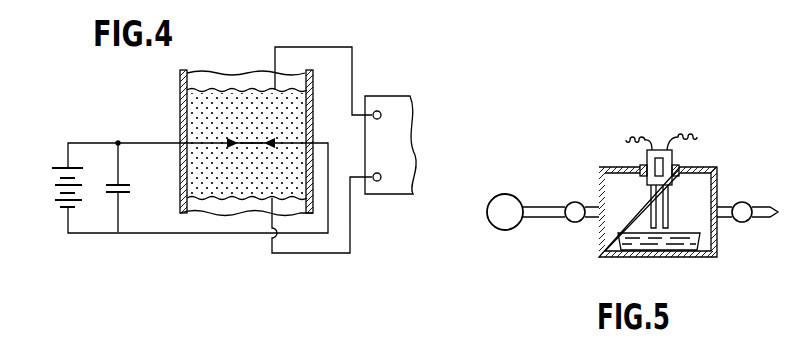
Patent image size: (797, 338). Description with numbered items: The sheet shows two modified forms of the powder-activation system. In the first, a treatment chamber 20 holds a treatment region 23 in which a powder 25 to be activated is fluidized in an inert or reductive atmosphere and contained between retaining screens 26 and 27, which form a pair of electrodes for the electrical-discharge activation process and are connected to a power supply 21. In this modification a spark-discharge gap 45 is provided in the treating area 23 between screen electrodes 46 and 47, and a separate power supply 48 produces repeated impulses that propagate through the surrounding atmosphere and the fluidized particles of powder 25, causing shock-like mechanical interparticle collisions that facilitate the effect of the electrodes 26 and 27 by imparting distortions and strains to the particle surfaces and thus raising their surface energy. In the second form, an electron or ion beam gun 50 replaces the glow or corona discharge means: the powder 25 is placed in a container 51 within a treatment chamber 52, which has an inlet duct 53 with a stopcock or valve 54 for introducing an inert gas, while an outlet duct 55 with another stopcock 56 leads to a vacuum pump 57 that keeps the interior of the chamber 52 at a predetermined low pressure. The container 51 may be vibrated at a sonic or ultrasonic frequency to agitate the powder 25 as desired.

In FIG. 4, the treatment chamber 20 is at (174, 99).
In FIG. 4, the power supply 21 is at (420, 141).
In FIG. 4, the treatment region 23 is at (310, 122).
In FIG. 4, the powder 25 is at (238, 98).
In FIG. 5, the powder 25 is at (645, 250).
In FIG. 4, the retaining screen 26 is at (197, 87).
In FIG. 4, the retaining screen 27 is at (223, 200).
In FIG. 4, the spark-discharge gap 45 is at (252, 150).
In FIG. 4, the screen electrode 46 is at (237, 141).
In FIG. 4, the screen electrode 47 is at (265, 141).
In FIG. 4, the power supply 48 is at (159, 240).
In FIG. 5, the electron or ion beam gun 50 is at (652, 146).
In FIG. 5, the container 51 is at (697, 250).
In FIG. 5, the treatment chamber 52 is at (606, 258).
In FIG. 5, the inlet duct 53 is at (760, 214).
In FIG. 5, the stopcock or valve 54 is at (745, 202).
In FIG. 5, the outlet duct 55 is at (540, 218).
In FIG. 5, the stopcock 56 is at (578, 202).
In FIG. 5, the vacuum pump 57 is at (487, 212).